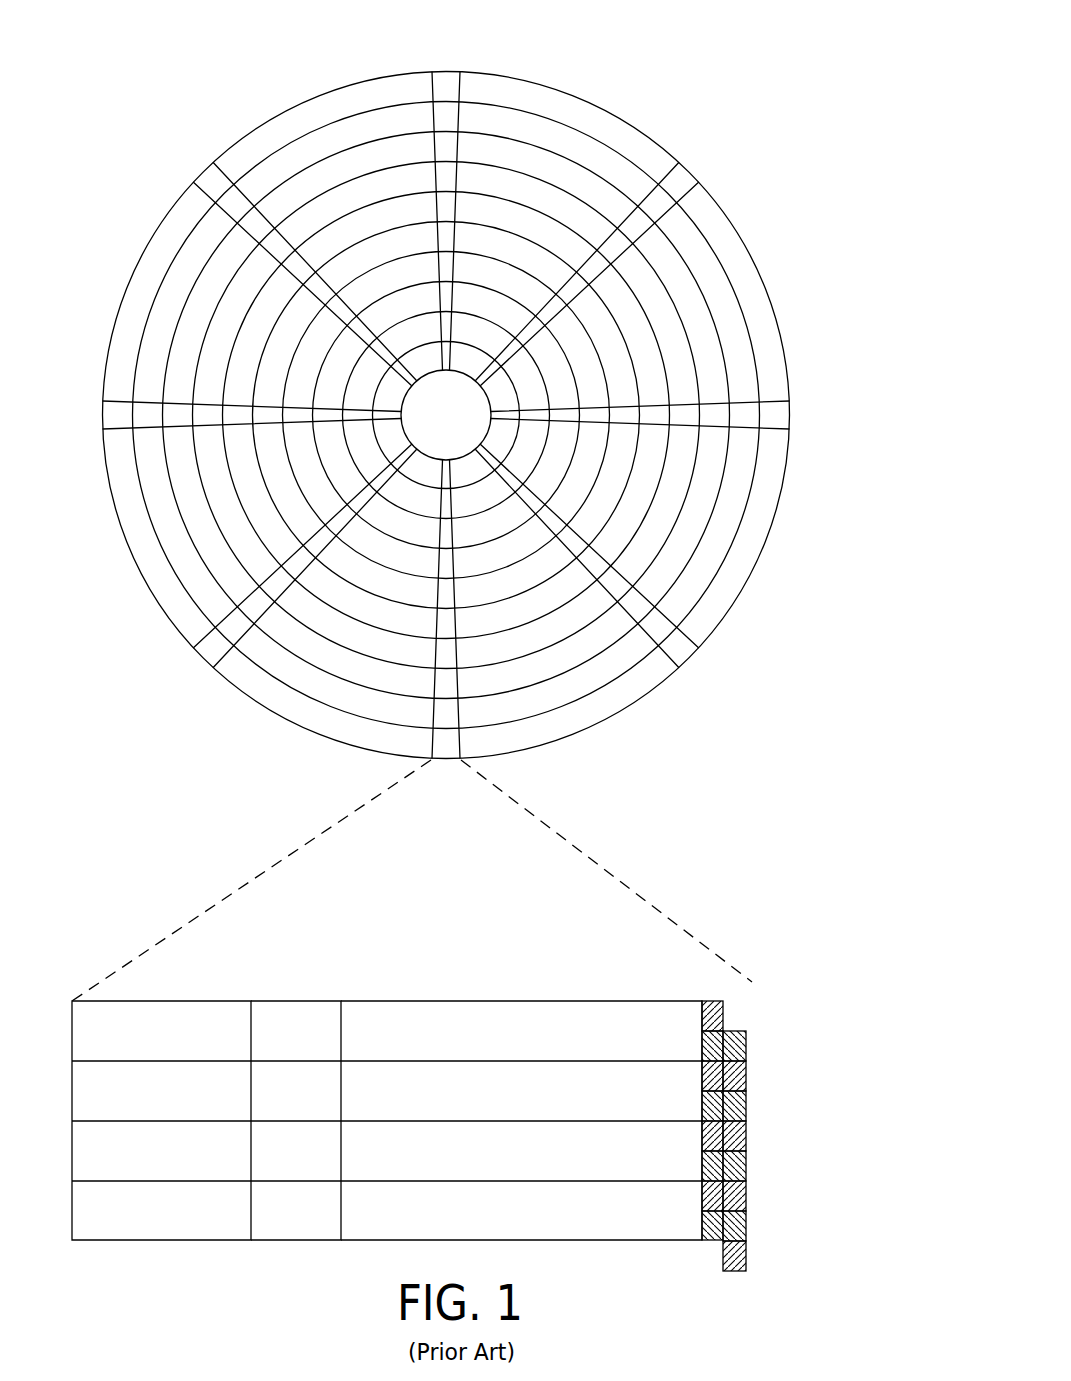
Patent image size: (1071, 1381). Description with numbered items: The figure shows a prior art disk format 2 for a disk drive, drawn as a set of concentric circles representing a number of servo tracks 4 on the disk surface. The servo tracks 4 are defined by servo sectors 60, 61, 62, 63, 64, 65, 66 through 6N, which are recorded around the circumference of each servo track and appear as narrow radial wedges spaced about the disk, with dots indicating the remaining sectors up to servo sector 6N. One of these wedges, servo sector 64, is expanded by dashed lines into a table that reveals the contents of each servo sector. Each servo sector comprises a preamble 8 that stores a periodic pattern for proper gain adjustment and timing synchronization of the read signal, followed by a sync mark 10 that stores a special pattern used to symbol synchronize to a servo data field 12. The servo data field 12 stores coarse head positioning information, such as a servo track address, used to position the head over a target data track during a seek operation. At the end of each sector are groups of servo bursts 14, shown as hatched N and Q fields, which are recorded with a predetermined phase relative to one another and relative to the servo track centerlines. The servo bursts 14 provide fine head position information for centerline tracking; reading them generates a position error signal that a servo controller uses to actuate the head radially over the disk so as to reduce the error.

The disk format 2 is at (192, 76).
The servo track 4 is at (563, 140).
The servo sector 60 is at (447, 82).
The servo sector 61 is at (683, 180).
The servo sector 62 is at (782, 418).
The servo sector 63 is at (682, 652).
The servo sector 64 is at (290, 836).
The servo sector 65 is at (210, 652).
The servo sector 66 is at (108, 415).
The servo sector 6N is at (210, 180).
The preamble 8 is at (170, 1001).
The sync mark 10 is at (297, 1001).
The servo data field 12 is at (505, 1001).
The servo bursts 14 is at (744, 996).